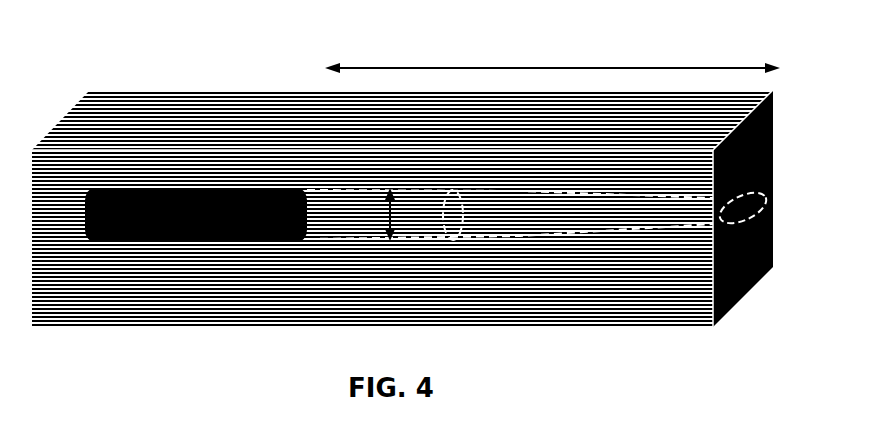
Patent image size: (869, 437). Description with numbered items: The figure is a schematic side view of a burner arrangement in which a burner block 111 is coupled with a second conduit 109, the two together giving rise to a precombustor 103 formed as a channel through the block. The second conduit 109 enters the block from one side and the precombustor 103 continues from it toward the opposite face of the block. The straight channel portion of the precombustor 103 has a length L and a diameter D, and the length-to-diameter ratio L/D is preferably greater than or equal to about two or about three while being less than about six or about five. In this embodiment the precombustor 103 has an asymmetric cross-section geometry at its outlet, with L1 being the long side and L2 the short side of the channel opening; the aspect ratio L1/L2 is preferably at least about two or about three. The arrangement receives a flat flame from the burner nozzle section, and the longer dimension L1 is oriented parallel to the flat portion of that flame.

The burner block 111 is at (95, 123).
The second conduit 109 is at (180, 190).
The precombustor 103 is at (713, 340).
The diameter of the straight channel precombustor D is at (387, 210).
The length of the straight channel precombustor L is at (552, 56).
The long side of the precombustor channel opening L1 is at (752, 222).
The short side of the precombustor channel opening L2 is at (772, 198).